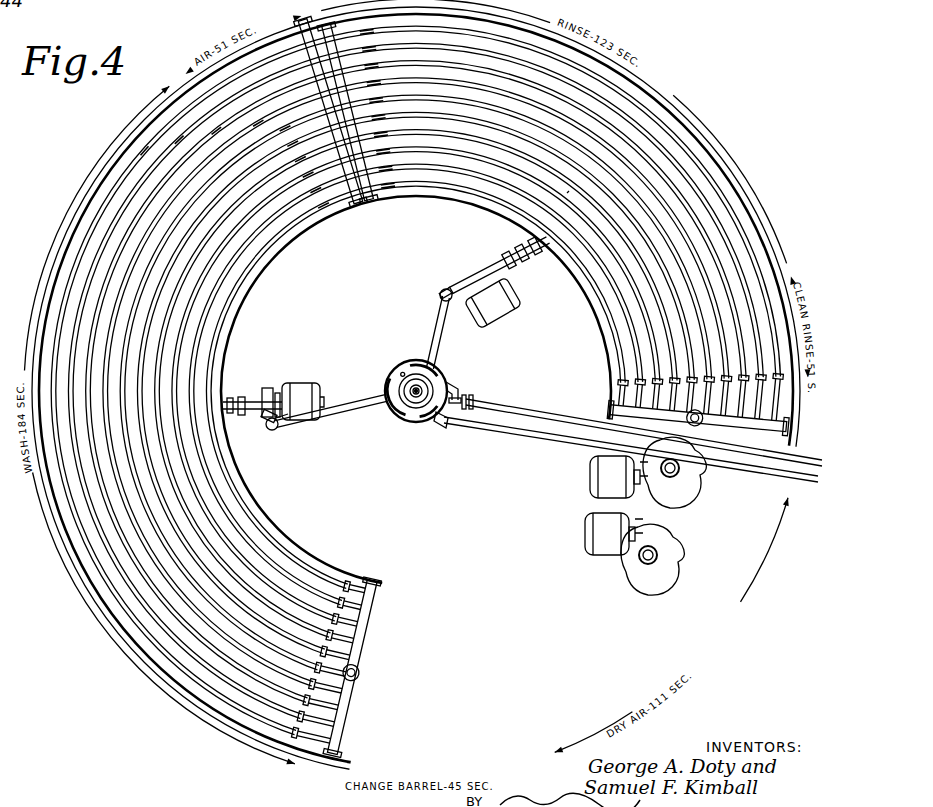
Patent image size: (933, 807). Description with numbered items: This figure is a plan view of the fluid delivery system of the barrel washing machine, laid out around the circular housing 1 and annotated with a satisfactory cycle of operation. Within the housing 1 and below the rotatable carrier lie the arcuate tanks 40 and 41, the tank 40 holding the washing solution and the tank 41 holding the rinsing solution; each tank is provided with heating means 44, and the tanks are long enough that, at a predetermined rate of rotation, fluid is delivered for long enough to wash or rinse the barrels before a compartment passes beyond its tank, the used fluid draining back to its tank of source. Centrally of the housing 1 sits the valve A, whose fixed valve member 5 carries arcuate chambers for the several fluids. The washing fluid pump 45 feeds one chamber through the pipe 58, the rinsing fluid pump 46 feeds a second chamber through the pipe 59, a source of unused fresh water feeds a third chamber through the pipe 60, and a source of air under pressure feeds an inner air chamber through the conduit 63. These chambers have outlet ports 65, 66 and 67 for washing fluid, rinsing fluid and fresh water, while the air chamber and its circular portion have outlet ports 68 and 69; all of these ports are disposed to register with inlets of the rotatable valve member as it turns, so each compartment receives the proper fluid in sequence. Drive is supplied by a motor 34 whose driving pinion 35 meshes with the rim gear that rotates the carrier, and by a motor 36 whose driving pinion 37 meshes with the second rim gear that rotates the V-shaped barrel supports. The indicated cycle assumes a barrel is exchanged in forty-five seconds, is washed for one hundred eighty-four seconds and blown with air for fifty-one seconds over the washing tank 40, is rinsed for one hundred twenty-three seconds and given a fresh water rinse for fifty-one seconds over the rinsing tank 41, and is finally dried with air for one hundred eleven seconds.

The housing 1 is at (88, 204).
The heating means 44 is at (223, 313).
The arcuate tank 40 is at (180, 350).
The washing fluid pump 45 is at (297, 383).
The pipe 58 is at (336, 421).
The outlet port 65 is at (386, 397).
The fixed valve member 5 is at (406, 419).
The outlet port 66 is at (432, 367).
The outlet port 67 is at (451, 380).
The outlet port 68 is at (404, 371).
The outlet port 69 is at (426, 421).
The valve A is at (390, 377).
The pipe 59 is at (438, 316).
The rinsing fluid pump 46 is at (505, 312).
The arcuate tank 41 is at (567, 193).
The pipe 60 is at (562, 420).
The conduit 63 is at (529, 440).
The motor 34 is at (590, 485).
The driving pinion 35 is at (680, 470).
The motor 36 is at (591, 545).
The driving pinion 37 is at (675, 545).